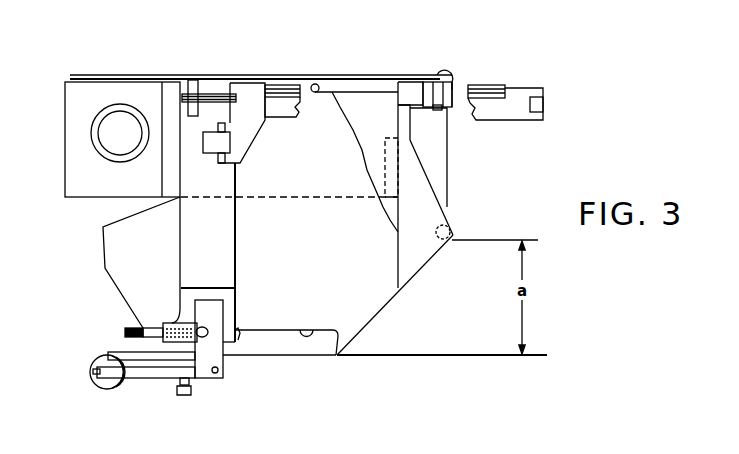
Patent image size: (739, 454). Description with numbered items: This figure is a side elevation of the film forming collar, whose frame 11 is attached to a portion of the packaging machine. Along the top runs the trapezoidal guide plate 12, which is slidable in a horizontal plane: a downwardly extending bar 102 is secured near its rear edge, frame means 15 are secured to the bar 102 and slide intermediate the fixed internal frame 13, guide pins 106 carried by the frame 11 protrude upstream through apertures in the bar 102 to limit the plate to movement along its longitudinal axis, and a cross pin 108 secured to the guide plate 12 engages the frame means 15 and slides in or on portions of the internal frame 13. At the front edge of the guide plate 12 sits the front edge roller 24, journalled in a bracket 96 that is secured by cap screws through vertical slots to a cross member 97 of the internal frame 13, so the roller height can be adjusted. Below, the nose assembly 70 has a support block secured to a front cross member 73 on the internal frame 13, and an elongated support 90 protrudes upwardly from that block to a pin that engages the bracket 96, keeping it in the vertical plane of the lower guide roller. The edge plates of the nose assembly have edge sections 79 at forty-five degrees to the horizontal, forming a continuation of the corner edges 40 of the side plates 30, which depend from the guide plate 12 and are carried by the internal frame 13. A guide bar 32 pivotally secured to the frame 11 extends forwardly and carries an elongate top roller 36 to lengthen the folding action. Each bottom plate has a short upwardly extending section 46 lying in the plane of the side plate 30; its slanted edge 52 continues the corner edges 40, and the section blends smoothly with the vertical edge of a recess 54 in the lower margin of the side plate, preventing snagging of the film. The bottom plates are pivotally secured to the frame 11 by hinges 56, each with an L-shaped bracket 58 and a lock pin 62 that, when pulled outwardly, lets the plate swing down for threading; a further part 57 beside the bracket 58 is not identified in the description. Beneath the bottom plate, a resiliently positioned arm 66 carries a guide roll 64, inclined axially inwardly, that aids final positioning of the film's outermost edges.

The frame 11 is at (153, 173).
The guide plate 12 is at (83, 75).
The internal frame 13 is at (382, 110).
The frame means 15 is at (405, 90).
The front edge roller 24 is at (445, 95).
The side plates 30 is at (335, 122).
The guide bar 32 is at (545, 86).
The top rollers 36 is at (495, 88).
The corner edges 40 is at (380, 308).
The upwardly extending section 46 is at (290, 345).
The slanted edge 52 is at (338, 353).
The recess 54 is at (313, 330).
The hinges 56 is at (169, 290).
The step 57 is at (238, 330).
The bracket 58 is at (212, 323).
The lock pin 62 is at (138, 325).
The guide roll 64 is at (102, 383).
The arm 66 is at (155, 372).
The nose assembly 70 is at (456, 210).
The front cross member 73 is at (387, 172).
The edge sections 79 is at (428, 265).
The support 90 is at (433, 133).
The bracket 96 is at (452, 88).
The cross member 97 is at (442, 77).
The bar 102 is at (193, 87).
The guide pins 106 is at (218, 100).
The cross pin 108 is at (312, 83).